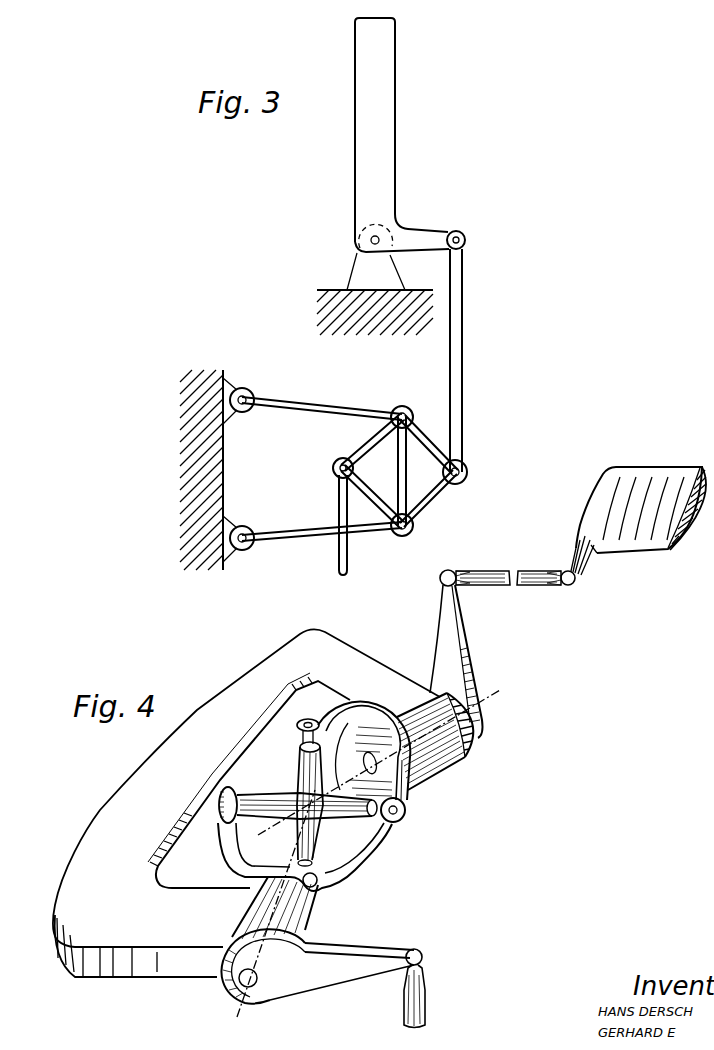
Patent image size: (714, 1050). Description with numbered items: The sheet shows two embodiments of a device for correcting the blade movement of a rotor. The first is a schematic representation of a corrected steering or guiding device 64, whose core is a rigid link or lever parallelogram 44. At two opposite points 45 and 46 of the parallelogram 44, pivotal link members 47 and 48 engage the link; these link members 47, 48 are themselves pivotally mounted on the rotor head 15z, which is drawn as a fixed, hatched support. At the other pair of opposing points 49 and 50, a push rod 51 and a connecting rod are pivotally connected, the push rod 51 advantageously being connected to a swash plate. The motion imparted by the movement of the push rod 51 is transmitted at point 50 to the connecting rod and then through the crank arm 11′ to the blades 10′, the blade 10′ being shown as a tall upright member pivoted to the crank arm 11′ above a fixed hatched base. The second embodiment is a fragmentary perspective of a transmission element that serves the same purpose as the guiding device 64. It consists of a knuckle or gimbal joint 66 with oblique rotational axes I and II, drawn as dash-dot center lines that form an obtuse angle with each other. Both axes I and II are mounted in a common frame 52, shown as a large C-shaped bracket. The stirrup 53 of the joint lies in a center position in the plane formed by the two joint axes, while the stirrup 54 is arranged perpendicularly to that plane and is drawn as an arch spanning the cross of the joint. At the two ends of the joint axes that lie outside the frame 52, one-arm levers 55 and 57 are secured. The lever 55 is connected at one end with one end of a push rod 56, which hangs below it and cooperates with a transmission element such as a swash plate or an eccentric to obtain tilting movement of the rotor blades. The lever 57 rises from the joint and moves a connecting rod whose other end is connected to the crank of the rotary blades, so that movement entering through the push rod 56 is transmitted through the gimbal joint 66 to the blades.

In FIG. 3, the blades 10′ is at (378, 112).
In FIG. 3, the crank arm 11′ is at (402, 238).
In FIG. 3, the corrected steering or guiding device 64 is at (467, 420).
In FIG. 3, the rotor head 15z is at (222, 443).
In FIG. 3, the pivotal link member 47 is at (303, 405).
In FIG. 3, the pivotal link member 48 is at (290, 537).
In FIG. 3, the point 45 is at (400, 410).
In FIG. 3, the point 49 is at (334, 464).
In FIG. 3, the push rod 51 is at (343, 505).
In FIG. 3, the point 46 is at (397, 539).
In FIG. 3, the point 50 is at (467, 468).
In FIG. 3, the rigid link or lever parallelogram 44 is at (432, 497).
In FIG. 4, the one arm lever 57 is at (447, 622).
In FIG. 4, the stirrup 54 is at (350, 700).
In FIG. 4, the frame 52 is at (222, 735).
In FIG. 4, the knuckle or gimbal joint 66 is at (410, 817).
In FIG. 4, the stirrup 53 is at (364, 877).
In FIG. 4, the one arm lever 55 is at (340, 975).
In FIG. 4, the push rod 56 is at (425, 1002).
In FIG. 4, the rotational axis I— I is at (268, 904).
In FIG. 4, the rotational axis II— II is at (365, 784).